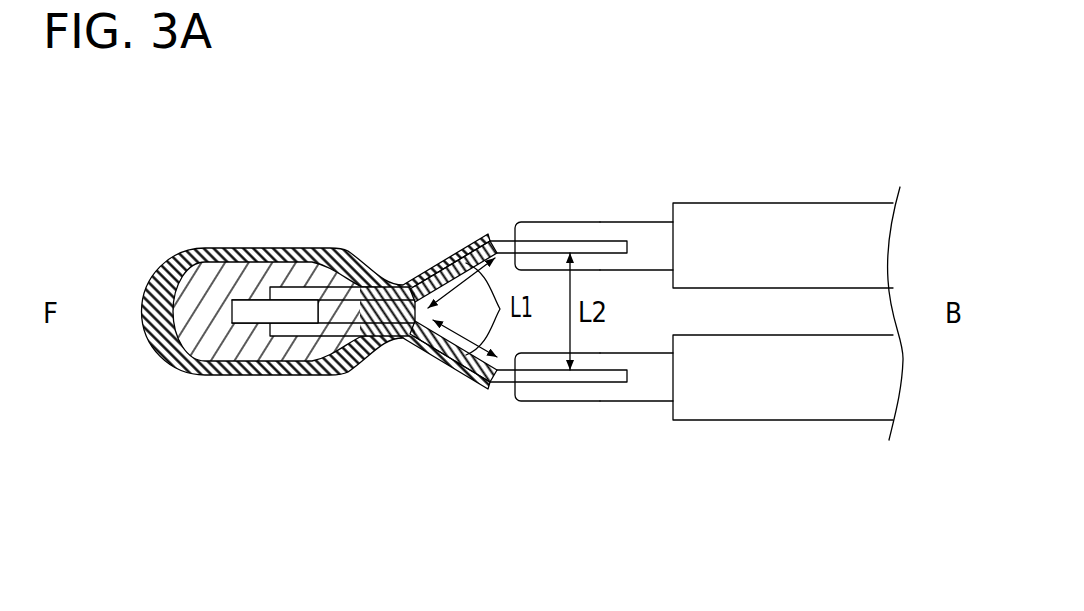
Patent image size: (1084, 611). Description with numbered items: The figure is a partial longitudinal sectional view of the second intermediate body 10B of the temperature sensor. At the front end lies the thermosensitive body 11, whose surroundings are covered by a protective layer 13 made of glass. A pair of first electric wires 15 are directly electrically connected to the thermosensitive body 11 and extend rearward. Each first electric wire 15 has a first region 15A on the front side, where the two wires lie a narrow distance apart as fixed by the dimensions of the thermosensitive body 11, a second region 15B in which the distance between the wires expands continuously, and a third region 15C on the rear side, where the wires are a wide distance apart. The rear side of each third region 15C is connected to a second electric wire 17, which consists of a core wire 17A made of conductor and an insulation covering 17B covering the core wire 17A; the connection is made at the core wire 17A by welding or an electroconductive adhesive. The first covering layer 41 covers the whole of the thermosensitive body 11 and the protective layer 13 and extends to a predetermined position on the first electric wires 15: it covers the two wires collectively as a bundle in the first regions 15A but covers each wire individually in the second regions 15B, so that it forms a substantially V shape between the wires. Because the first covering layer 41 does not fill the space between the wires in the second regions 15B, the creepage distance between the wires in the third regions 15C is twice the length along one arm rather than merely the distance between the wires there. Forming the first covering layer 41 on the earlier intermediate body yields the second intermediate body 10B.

The second intermediate body 10B is at (856, 201).
The thermosensitive body 11 is at (244, 328).
The protective layer 13 is at (231, 249).
The first electric wire 15 is at (429, 316).
The first region 15A is at (378, 245).
The second region 15B is at (442, 242).
The third region 15C is at (558, 319).
The second electric wire 17 is at (616, 311).
The core wire 17A is at (638, 221).
The insulation covering 17B is at (710, 203).
The first covering layer 41 is at (192, 376).